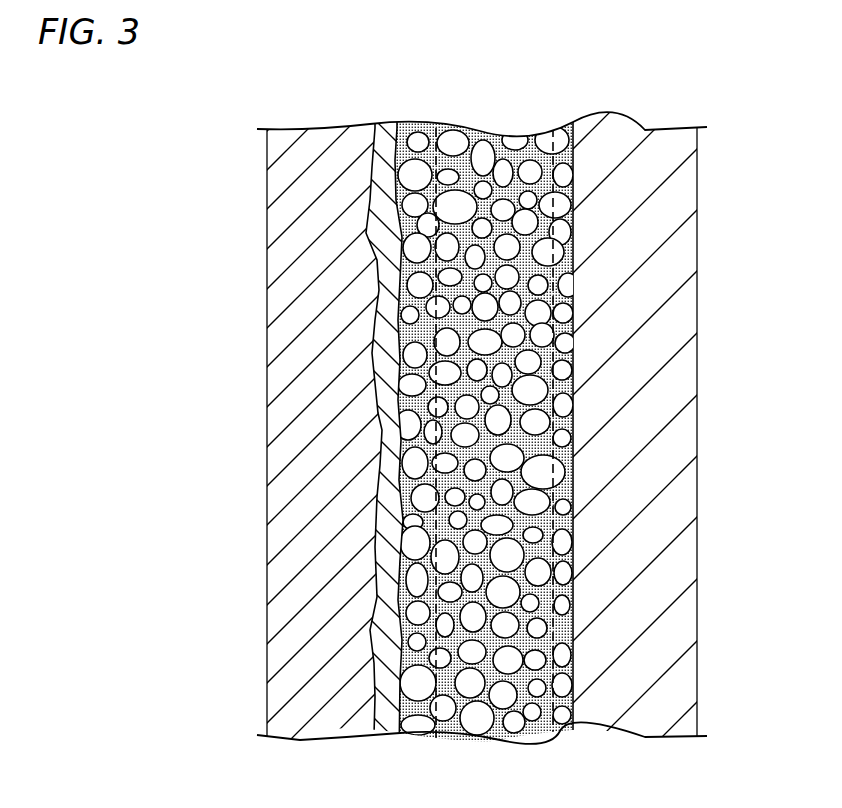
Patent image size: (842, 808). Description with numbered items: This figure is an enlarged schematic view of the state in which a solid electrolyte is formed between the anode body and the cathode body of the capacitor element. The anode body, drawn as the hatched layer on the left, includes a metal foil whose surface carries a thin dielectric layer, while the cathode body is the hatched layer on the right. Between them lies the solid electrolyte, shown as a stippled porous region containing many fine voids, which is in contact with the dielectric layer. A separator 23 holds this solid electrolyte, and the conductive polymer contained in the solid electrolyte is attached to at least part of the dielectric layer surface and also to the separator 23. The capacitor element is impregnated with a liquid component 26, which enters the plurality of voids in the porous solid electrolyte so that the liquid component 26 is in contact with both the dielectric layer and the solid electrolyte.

The separator 23 is at (565, 728).
The liquid component 26 is at (437, 732).